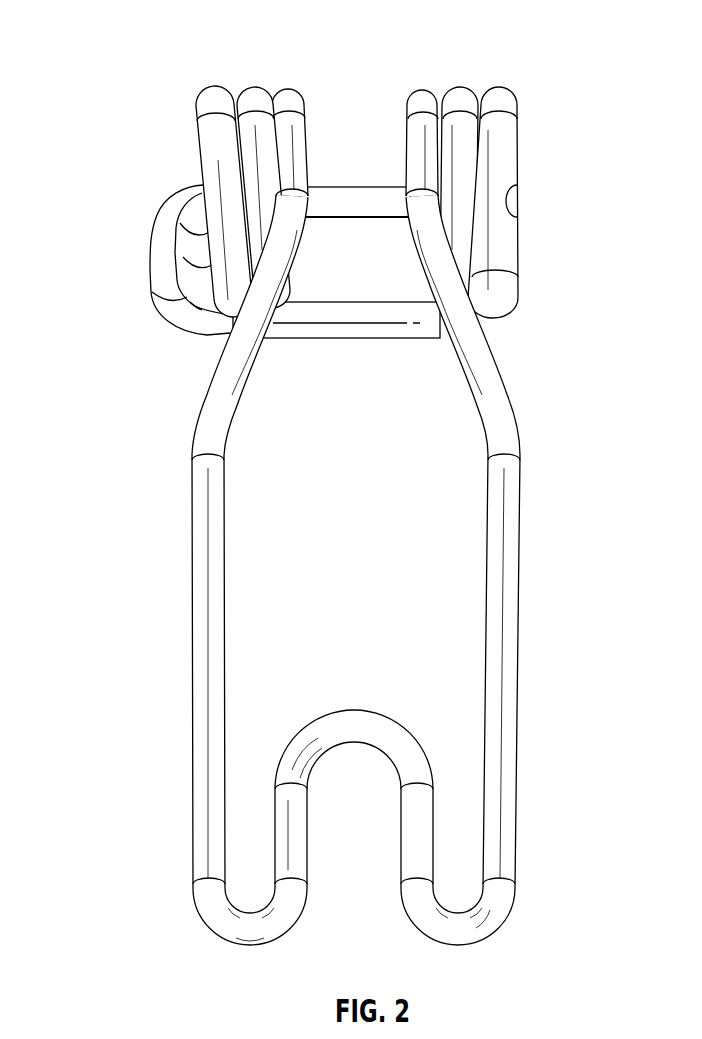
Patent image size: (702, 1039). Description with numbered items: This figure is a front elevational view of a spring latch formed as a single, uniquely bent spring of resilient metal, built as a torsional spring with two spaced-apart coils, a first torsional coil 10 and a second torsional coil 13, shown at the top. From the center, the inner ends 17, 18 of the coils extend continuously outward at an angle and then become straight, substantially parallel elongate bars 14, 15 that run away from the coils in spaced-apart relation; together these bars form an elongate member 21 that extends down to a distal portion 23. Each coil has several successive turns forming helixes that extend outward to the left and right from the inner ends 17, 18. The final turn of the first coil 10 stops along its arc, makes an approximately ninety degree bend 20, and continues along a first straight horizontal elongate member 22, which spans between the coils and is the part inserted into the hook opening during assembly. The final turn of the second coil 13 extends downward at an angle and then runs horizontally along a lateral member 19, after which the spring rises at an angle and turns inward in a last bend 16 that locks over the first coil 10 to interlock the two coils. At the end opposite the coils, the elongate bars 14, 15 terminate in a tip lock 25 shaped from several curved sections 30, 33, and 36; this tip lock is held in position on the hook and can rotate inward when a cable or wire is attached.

The first torsional coil 10 is at (218, 67).
The second torsional coil 13 is at (497, 76).
The elongate bar 14 is at (196, 724).
The elongate bar 15 is at (512, 580).
The last bend 16 is at (166, 199).
The inner end 17 is at (303, 225).
The inner end 18 is at (413, 230).
The lateral member 19 is at (370, 325).
The bend 20 is at (190, 215).
The elongate member 21 is at (110, 575).
The elongate horizontal member 22 is at (358, 186).
The distal portion 23 is at (255, 1004).
The tip lock 25 is at (437, 826).
The curved section 30 is at (245, 946).
The curved section 33 is at (356, 710).
The curved section 36 is at (462, 946).